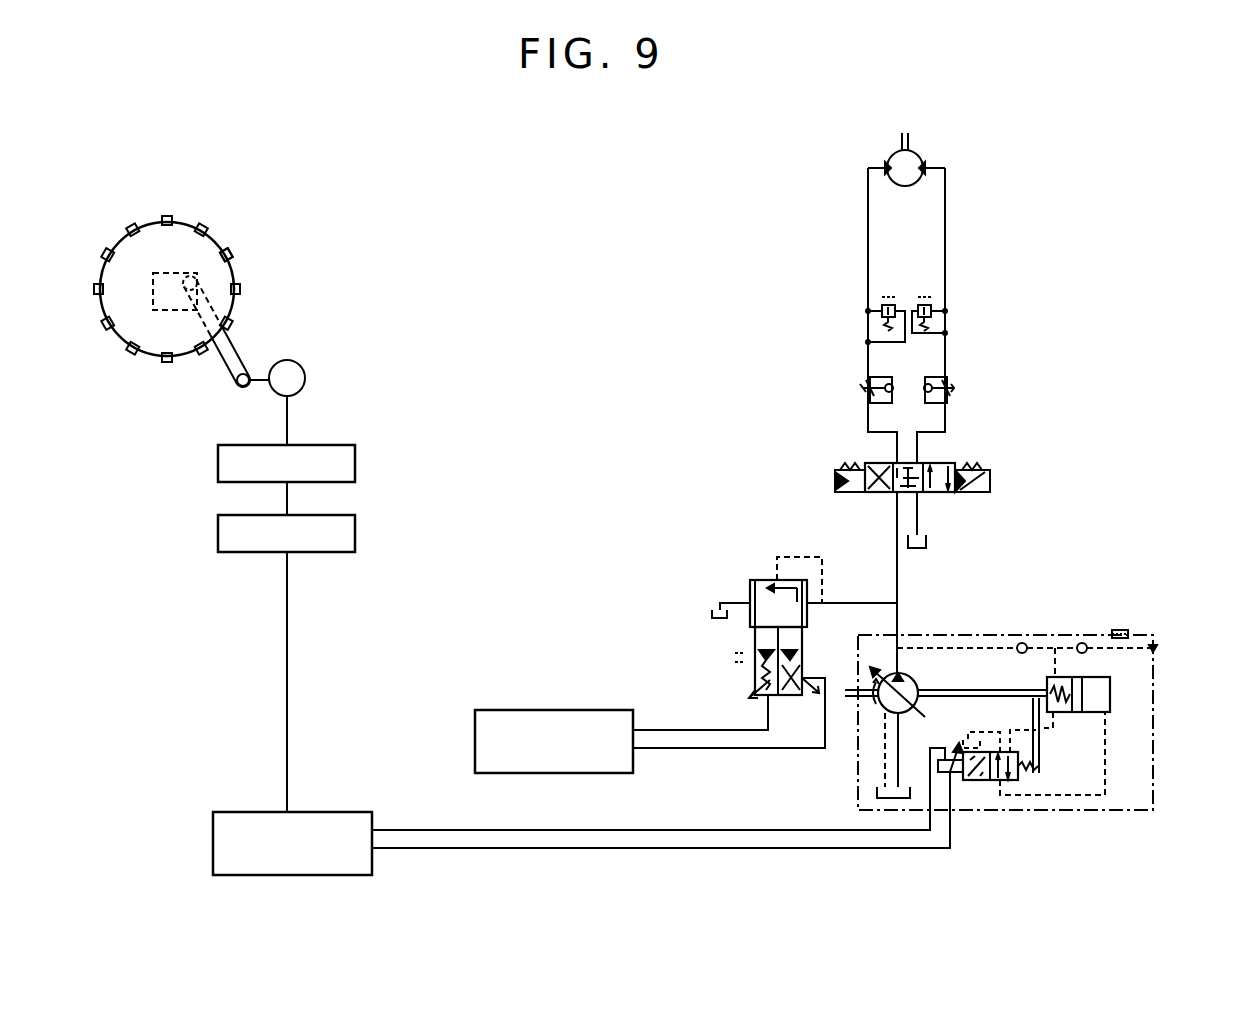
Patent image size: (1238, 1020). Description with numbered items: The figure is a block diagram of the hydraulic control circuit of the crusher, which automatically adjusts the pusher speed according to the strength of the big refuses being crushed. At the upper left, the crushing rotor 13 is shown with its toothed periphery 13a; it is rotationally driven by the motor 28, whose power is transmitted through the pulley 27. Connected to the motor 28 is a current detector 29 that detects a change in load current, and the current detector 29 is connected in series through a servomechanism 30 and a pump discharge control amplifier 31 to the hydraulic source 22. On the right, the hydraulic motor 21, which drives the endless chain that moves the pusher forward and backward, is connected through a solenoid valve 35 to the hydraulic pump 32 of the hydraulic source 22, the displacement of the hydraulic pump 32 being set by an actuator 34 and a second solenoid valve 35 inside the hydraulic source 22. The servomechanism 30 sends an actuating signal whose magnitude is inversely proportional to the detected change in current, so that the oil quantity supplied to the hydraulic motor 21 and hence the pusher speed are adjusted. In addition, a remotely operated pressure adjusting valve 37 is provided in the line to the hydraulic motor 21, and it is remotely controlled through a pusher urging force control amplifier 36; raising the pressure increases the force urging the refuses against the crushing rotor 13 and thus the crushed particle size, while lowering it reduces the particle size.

The crushing rotor 13 is at (191, 205).
The gear teeth 13a is at (238, 289).
The pulley 27 is at (236, 346).
The motor 28 is at (306, 374).
The current detector 29 is at (355, 462).
The servomechanism 30 is at (355, 533).
The pump discharge control amplifier 31 is at (343, 812).
The hydraulic motor 21 is at (918, 158).
The solenoid valve 35 is at (959, 452).
The remotely operated pressure adjusting valve 37 is at (752, 575).
The pusher urging force control amplifier 36 is at (551, 710).
The hydraulic source 22 is at (1087, 630).
The hydraulic pump 32 is at (914, 676).
The displacement control actuator 34 is at (1118, 702).